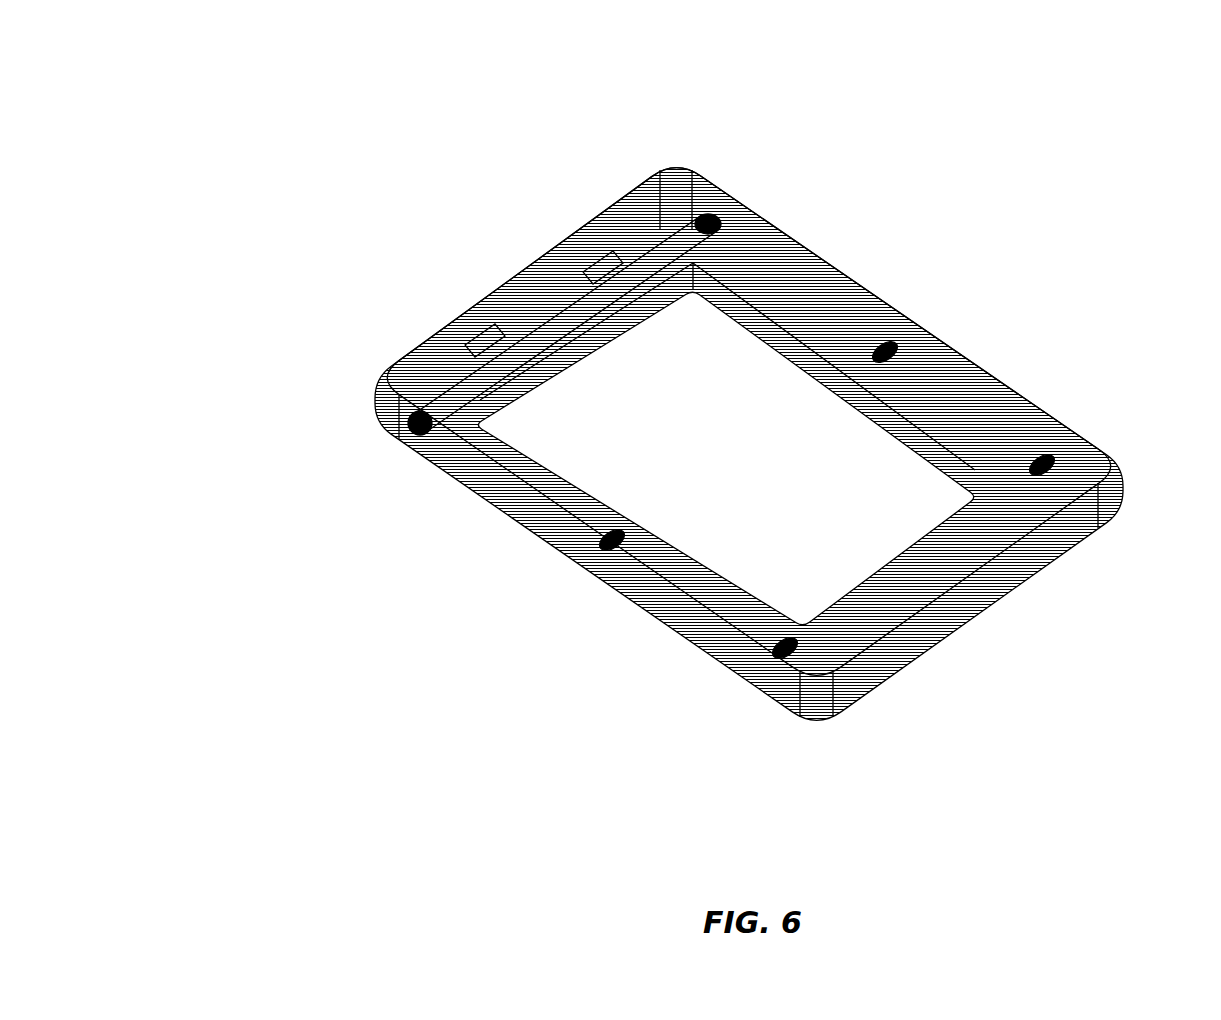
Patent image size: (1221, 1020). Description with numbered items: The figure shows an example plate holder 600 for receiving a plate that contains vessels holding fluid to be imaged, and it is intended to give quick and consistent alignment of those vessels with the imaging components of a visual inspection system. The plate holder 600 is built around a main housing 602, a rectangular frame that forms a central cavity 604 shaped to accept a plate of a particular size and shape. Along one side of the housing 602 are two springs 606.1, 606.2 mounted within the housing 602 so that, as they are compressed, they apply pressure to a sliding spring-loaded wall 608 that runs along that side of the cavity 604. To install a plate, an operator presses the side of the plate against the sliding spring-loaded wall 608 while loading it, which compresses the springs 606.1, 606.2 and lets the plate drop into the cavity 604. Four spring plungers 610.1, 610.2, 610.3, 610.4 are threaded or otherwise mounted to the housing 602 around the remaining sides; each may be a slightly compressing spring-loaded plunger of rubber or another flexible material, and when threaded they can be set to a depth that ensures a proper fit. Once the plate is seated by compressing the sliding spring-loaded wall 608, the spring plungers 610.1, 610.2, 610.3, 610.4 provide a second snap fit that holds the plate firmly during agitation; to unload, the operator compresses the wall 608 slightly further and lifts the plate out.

The plate holder 600 is at (690, 374).
The main housing 602 is at (1105, 455).
The cavity 604 is at (573, 434).
The spring 606.1 is at (470, 335).
The spring 606.2 is at (600, 257).
The sliding spring-loaded wall 608 is at (693, 252).
The spring plunger 610.1 is at (897, 343).
The spring plunger 610.2 is at (1043, 458).
The spring plunger 610.3 is at (600, 535).
The spring plunger 610.4 is at (790, 648).